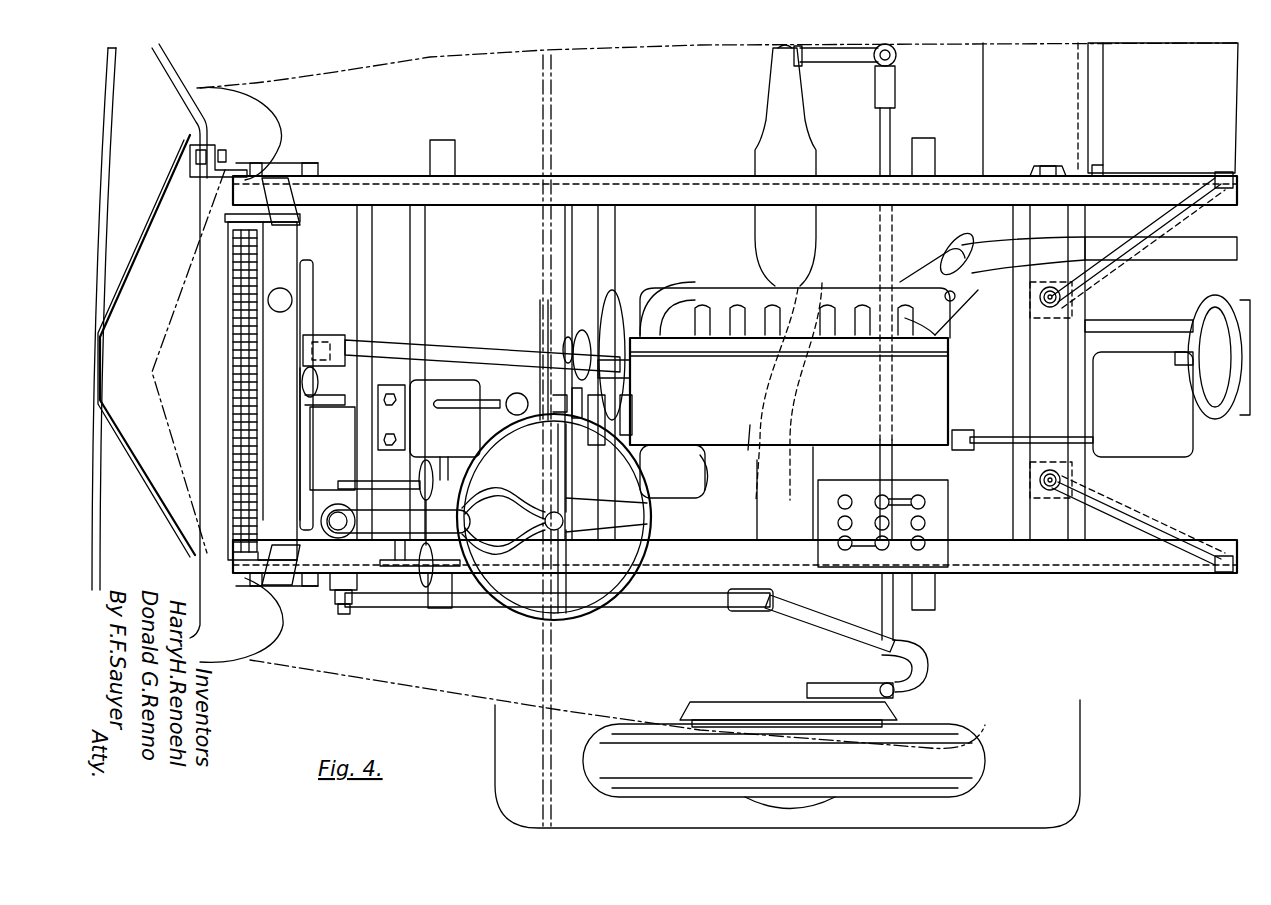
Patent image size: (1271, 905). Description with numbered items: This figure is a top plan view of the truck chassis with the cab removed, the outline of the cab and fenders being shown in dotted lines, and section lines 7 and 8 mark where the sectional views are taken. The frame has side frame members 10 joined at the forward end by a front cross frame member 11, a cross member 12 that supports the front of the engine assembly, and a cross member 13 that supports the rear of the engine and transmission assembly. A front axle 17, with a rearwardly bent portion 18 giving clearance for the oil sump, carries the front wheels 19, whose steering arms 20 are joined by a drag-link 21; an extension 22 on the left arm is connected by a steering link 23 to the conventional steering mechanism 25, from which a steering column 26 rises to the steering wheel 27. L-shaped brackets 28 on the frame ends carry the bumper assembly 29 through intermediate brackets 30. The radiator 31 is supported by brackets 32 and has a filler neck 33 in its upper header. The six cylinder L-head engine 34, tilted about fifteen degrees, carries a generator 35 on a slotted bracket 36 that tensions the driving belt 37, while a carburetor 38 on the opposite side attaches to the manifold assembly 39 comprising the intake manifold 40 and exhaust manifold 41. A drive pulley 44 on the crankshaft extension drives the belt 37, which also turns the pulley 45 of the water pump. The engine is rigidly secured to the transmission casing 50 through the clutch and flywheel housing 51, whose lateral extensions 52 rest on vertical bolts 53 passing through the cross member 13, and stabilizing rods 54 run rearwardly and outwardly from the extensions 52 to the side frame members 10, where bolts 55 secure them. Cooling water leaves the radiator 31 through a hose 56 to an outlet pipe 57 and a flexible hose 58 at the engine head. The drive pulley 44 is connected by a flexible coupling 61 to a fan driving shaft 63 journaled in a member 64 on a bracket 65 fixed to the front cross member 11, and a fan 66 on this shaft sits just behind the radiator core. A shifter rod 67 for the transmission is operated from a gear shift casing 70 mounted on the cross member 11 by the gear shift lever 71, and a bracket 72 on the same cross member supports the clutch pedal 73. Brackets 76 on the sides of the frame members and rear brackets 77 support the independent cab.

The section line 7- 7 is at (512, 60).
The section line 8- 8 is at (585, 122).
The side frame members 10 is at (640, 195).
The front cross frame member 11 is at (392, 200).
The cross member 12 is at (580, 210).
The cross member 13 is at (1030, 212).
The front axle 17 is at (765, 98).
The rearwardly bent portion 18 is at (800, 398).
The front wheels 19 is at (975, 755).
The steering arms 20 is at (838, 70).
The drag-link 21 is at (895, 620).
The extension 22 is at (832, 625).
The steering link 23 is at (690, 604).
The steering mechanism 25 is at (345, 510).
The steering column 26 is at (393, 570).
The steering wheel 27 is at (590, 618).
The L-shaped brackets 28 is at (282, 165).
The bumper assembly 29 is at (104, 98).
The intermediate brackets 30 is at (205, 150).
The radiator 31 is at (233, 310).
The brackets 32 is at (255, 540).
The filler neck 33 is at (283, 290).
The engine 34 is at (740, 449).
The generator 35 is at (682, 492).
The slotted bracket 36 is at (632, 420).
The driving belt 37 is at (600, 315).
The carburetor 38 is at (795, 280).
The manifold assembly 39 is at (800, 288).
The intake manifold 40 is at (712, 290).
The exhaust manifold 41 is at (665, 285).
The drive pulley 44 is at (548, 330).
The pulley 45 is at (575, 393).
The transmission casing 50 is at (1190, 455).
The housing 51 is at (995, 322).
The lateral extensions 52 is at (1075, 300).
The vertical bolts 53 is at (1060, 296).
The stabilizing rods 54 is at (1158, 232).
The bolts 55 is at (1222, 172).
The hose 56 is at (326, 335).
The outlet pipe 57 is at (440, 348).
The flexible hose 58 is at (625, 382).
The flexible coupling 61 is at (560, 345).
The fan driving shaft 63 is at (575, 355).
The member 64 is at (310, 400).
The bracket 65 is at (360, 436).
The fan 66 is at (310, 458).
The shifter rod 67 is at (1095, 440).
The gear shift casing 70 is at (406, 452).
The gear shift lever 71 is at (456, 406).
The bracket 72 is at (446, 482).
The clutch pedal 73 is at (428, 590).
The brackets 76 is at (456, 158).
The brackets 77 is at (937, 152).